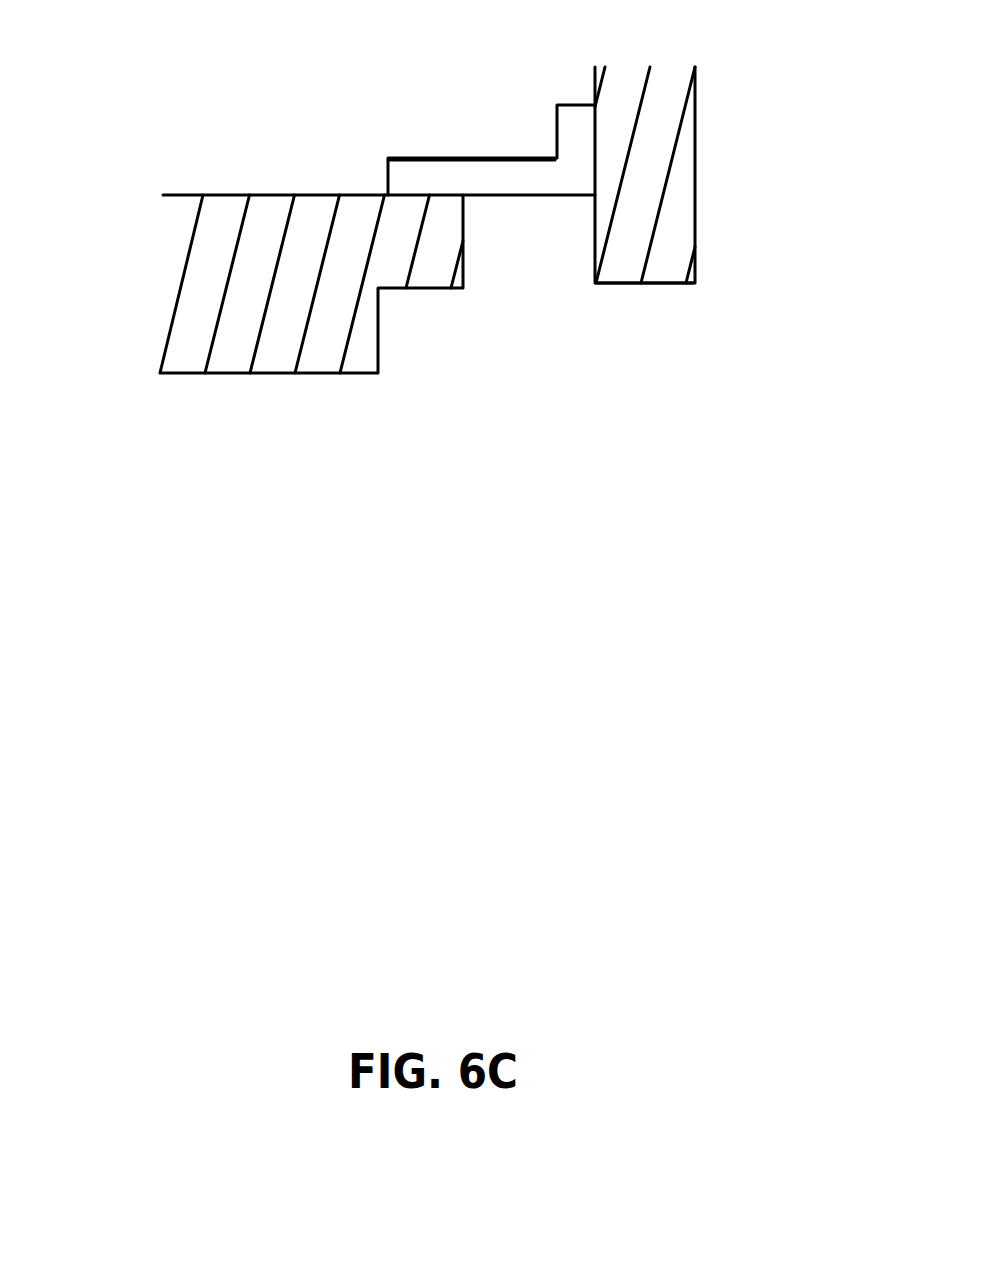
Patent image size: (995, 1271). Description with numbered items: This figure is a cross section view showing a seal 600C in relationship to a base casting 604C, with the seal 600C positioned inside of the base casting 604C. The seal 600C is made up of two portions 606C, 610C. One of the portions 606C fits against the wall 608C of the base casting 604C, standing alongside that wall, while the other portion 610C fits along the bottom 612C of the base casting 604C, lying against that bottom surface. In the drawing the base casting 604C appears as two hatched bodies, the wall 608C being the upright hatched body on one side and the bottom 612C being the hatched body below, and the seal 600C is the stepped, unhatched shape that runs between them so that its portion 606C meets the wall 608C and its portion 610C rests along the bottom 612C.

The seal 600C is at (420, 158).
The base casting 604C is at (432, 288).
The portion of the seal 606C is at (568, 125).
The wall of the base casting 608C is at (657, 210).
The portion of the seal 610C is at (417, 173).
The bottom of the base casting 612C is at (225, 285).